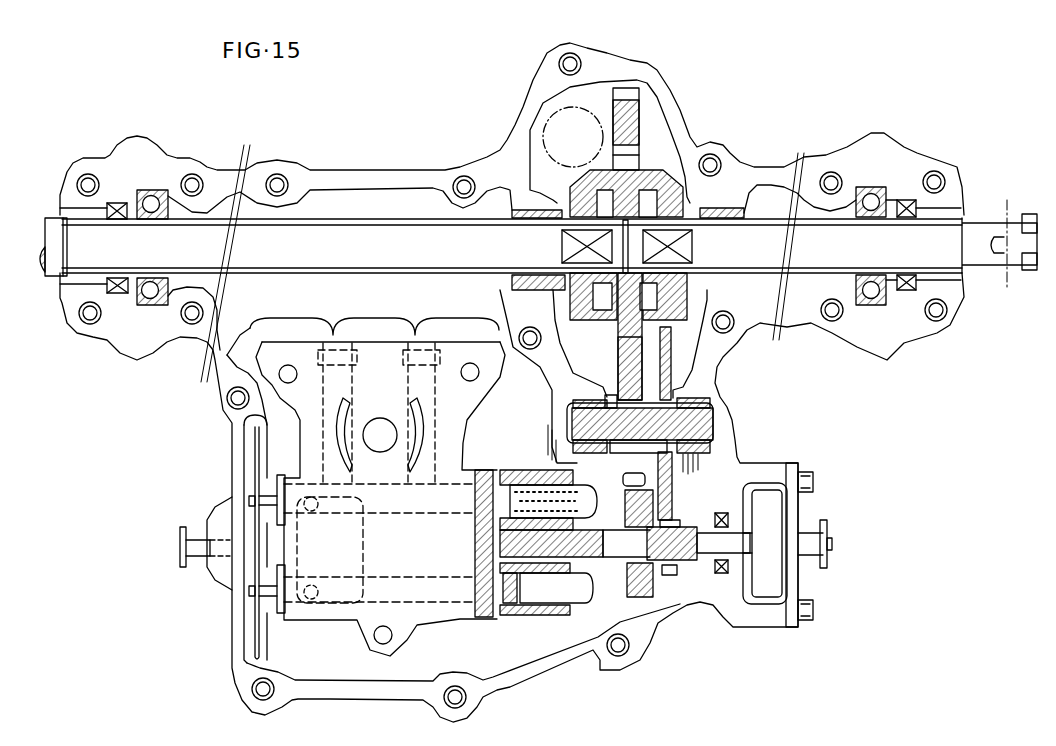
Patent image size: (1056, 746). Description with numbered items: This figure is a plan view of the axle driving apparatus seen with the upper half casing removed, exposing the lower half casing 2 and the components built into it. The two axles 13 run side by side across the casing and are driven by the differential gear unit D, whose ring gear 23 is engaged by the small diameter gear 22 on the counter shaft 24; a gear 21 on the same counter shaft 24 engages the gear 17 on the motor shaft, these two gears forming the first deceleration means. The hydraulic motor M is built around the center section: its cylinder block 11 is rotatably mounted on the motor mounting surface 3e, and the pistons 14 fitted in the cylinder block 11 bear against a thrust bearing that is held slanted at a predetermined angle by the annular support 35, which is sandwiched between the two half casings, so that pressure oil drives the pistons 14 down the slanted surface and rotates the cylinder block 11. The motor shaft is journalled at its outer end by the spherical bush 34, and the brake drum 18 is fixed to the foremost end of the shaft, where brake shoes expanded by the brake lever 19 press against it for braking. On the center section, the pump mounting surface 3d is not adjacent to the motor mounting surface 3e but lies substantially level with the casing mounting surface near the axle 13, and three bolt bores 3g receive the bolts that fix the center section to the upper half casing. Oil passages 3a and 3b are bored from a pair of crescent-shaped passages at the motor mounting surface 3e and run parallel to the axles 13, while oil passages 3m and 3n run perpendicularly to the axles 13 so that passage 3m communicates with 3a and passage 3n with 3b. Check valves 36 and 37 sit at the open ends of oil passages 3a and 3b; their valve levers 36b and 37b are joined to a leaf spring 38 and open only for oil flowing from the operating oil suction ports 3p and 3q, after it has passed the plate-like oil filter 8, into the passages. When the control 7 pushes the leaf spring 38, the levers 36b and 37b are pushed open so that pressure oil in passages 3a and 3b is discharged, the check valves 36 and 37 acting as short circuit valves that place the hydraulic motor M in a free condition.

The lower half casing 2 is at (379, 168).
The axle 13 is at (362, 272).
The differential gear unit D is at (649, 163).
The motor mounting surface 3e is at (499, 468).
The bolt bore 3g is at (285, 366).
The oil passage 3n is at (346, 386).
The oil passage 3m is at (427, 383).
The pump mounting surface 3d is at (388, 453).
The oil passage 3a is at (427, 508).
The oil passage 3b is at (441, 580).
The plate-like oil filter 8 is at (364, 540).
The operating oil suction port 3p is at (311, 498).
The operating oil suction port 3q is at (312, 586).
The leaf spring 38 is at (252, 608).
The check valve 36 is at (277, 473).
The valve lever 36b is at (250, 499).
The check valve 37 is at (280, 615).
The valve lever 37b is at (256, 610).
The control 7 is at (180, 553).
The ring gear 23 is at (617, 358).
The small diameter gear 22 is at (607, 400).
The gear 21 is at (670, 362).
The counter shaft 24 is at (703, 427).
The annular support 35 is at (625, 495).
The piston 14 is at (577, 591).
The cylinder block 11 is at (530, 617).
The gear 17 is at (668, 577).
The spherical bush 34 is at (700, 567).
The brake drum 18 is at (770, 603).
The brake lever 19 is at (825, 528).
The hydraulic motor M is at (558, 630).